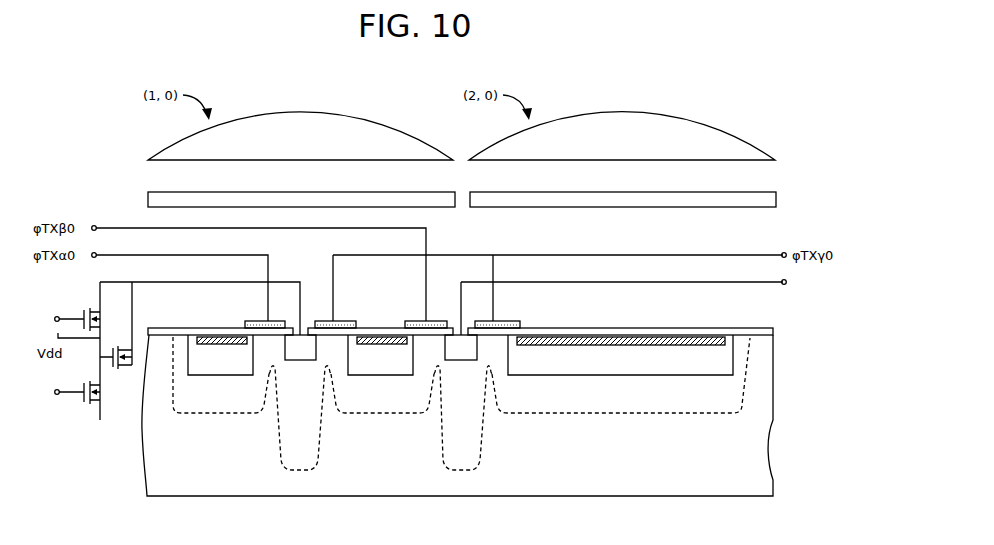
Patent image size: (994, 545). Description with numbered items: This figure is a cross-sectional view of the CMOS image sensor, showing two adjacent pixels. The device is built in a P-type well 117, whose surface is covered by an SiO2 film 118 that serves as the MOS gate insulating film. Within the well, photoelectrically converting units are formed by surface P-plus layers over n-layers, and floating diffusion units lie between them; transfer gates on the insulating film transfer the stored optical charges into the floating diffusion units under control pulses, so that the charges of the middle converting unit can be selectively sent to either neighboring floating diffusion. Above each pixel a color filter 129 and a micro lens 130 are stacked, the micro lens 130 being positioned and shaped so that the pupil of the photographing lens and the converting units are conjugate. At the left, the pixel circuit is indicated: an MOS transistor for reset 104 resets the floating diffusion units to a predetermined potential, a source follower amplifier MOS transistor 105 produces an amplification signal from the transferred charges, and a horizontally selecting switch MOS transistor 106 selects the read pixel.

The micro lens 130 is at (461, 136).
The color filter 129 is at (187, 196).
The MOS transistor for reset 104 is at (77, 312).
The source follower amplifier MOS transistor 105 is at (117, 369).
The horizontally selecting switch MOS transistor 106 is at (77, 402).
The P-type well 117 is at (457, 415).
The SiO2 film 118 is at (463, 323).